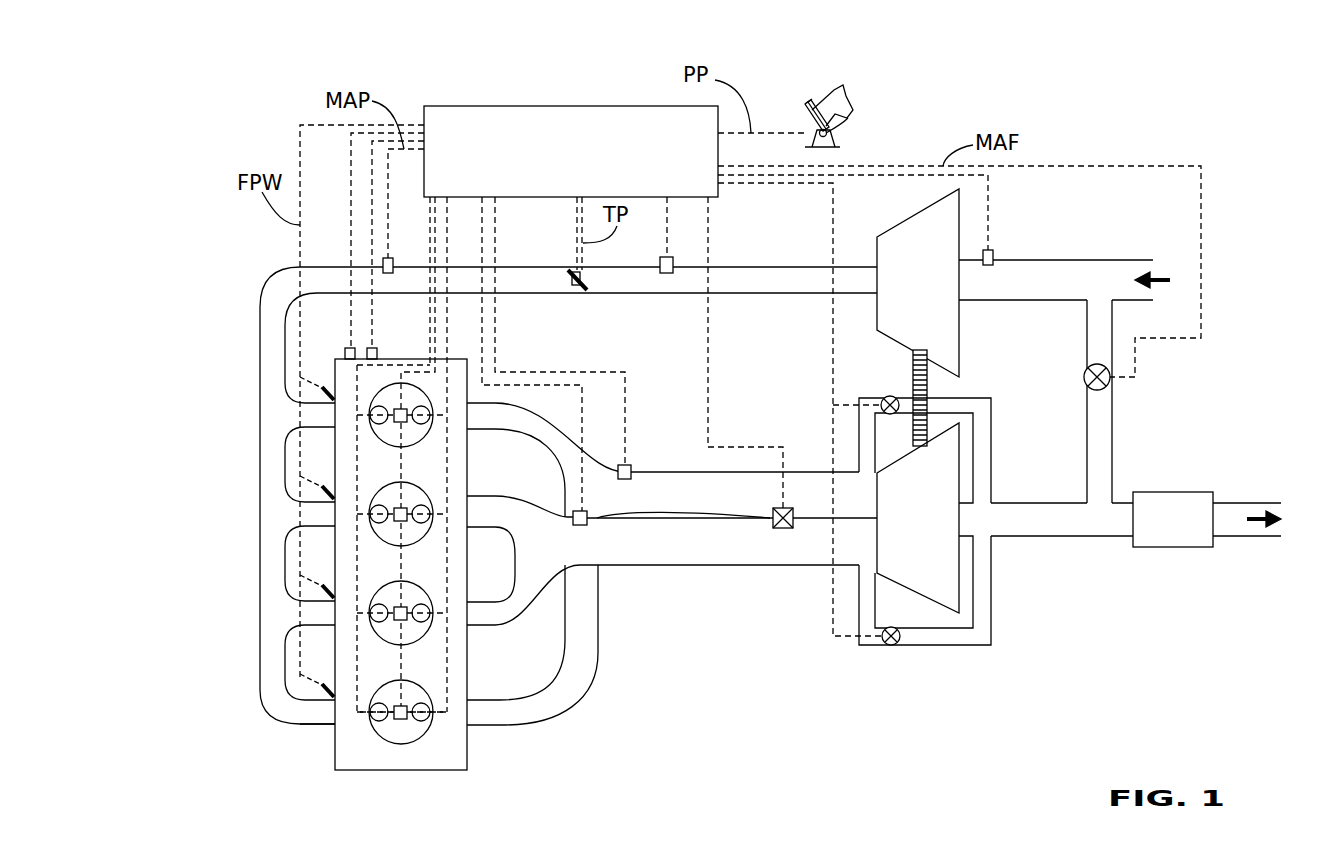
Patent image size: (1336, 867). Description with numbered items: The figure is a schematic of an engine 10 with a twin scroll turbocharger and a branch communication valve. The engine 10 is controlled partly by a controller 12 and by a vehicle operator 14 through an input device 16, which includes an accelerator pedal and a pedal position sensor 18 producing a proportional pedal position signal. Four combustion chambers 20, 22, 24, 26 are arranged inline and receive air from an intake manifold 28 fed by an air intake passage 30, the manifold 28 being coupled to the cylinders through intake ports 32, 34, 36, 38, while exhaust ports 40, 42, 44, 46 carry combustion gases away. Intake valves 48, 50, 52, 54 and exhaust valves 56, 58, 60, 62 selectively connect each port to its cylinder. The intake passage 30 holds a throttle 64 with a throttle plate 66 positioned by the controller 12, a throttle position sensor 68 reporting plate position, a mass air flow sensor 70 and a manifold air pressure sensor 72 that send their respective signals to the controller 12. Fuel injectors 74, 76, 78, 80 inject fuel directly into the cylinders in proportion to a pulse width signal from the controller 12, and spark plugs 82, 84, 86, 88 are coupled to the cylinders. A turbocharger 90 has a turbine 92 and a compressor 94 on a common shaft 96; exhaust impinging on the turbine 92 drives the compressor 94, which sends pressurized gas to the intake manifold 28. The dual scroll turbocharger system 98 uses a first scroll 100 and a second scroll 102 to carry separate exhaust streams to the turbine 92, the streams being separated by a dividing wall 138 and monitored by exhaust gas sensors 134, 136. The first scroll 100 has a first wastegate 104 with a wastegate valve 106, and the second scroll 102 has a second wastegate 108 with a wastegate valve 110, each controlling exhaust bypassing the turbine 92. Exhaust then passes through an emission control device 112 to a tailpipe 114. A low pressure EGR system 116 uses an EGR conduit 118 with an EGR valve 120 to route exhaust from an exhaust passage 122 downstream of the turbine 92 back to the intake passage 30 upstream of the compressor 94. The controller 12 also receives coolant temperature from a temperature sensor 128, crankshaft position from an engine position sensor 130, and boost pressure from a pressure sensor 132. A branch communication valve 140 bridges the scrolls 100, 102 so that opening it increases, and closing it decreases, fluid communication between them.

The engine 10 is at (168, 426).
The controller 12 is at (750, 409).
The vehicle operator 14 is at (840, 100).
The input device 16 is at (805, 120).
The pedal position sensor 18 is at (843, 130).
The combustion chamber 20 is at (426, 436).
The combustion chamber 22 is at (426, 535).
The combustion chamber 24 is at (426, 634).
The combustion chamber 26 is at (426, 733).
The intake manifold 28 is at (260, 320).
The air intake passage 30 is at (1068, 260).
The intake port 32 is at (335, 416).
The intake port 34 is at (335, 516).
The intake port 36 is at (335, 615).
The intake port 38 is at (335, 714).
The exhaust port 40 is at (468, 418).
The exhaust port 42 is at (468, 516).
The exhaust port 44 is at (468, 618).
The exhaust port 46 is at (468, 716).
The intake valve 48 is at (381, 406).
The intake valve 50 is at (381, 505).
The intake valve 52 is at (381, 604).
The intake valve 54 is at (381, 703).
The exhaust valve 56 is at (437, 391).
The exhaust valve 58 is at (437, 490).
The exhaust valve 60 is at (437, 589).
The exhaust valve 62 is at (437, 688).
The throttle 64 is at (577, 278).
The throttle plate 66 is at (595, 289).
The throttle position sensor 68 is at (590, 272).
The mass air flow sensor 70 is at (995, 258).
The manifold air pressure sensor 72 is at (390, 258).
The fuel injector 74 is at (330, 372).
The fuel injector 76 is at (330, 471).
The fuel injector 78 is at (330, 570).
The fuel injector 80 is at (330, 669).
The spark plug 82 is at (384, 424).
The spark plug 84 is at (384, 523).
The spark plug 86 is at (384, 622).
The spark plug 88 is at (384, 721).
The turbocharger 90 is at (989, 388).
The turbine 92 is at (918, 518).
The compressor 94 is at (918, 283).
The common shaft 96 is at (912, 381).
The dual scroll turbocharger system 98 is at (722, 626).
The first scroll 100 is at (692, 472).
The second scroll 102 is at (655, 566).
The first wastegate 104 is at (991, 456).
The wastegate valve 106 is at (890, 414).
The second wastegate 108 is at (992, 578).
The wastegate valve 110 is at (892, 646).
The emission control device 112 is at (1173, 519).
The tailpipe 114 is at (1233, 503).
The EGR system 116 is at (1157, 408).
The EGR conduit 118 is at (1087, 456).
The EGR valve 120 is at (1084, 377).
The exhaust passage 122 is at (1022, 537).
The temperature sensor 128 is at (373, 348).
The engine position sensor 130 is at (348, 348).
The pressure sensor 132 is at (672, 257).
The exhaust gas sensor 134 is at (618, 467).
The exhaust gas sensor 136 is at (573, 515).
The dividing wall 138 is at (822, 532).
The branch communication valve 140 is at (782, 528).